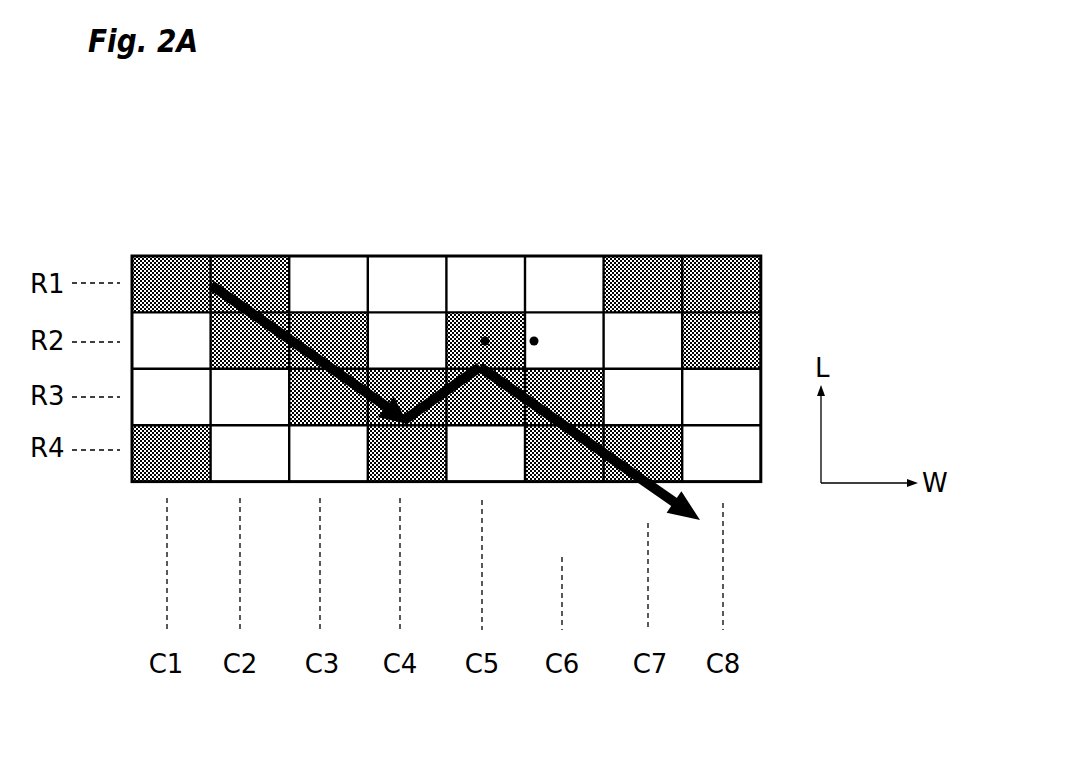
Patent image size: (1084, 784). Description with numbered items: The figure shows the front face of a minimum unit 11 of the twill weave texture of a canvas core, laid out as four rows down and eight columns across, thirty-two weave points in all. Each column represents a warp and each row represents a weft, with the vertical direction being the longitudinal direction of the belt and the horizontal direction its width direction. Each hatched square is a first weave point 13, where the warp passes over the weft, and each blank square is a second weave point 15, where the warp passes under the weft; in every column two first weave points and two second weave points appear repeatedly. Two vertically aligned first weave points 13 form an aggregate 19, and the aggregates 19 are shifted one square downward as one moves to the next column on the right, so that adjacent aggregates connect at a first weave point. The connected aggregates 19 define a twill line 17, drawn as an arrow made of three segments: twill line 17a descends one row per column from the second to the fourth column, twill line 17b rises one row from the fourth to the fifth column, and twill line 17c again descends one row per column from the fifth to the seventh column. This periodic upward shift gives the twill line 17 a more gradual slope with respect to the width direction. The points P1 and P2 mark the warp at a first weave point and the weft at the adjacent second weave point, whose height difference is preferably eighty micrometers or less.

The minimum unit 11 is at (493, 305).
The first weave point 13 is at (642, 257).
The second weave point 15 is at (563, 283).
The twill line 17 is at (542, 404).
The twill line 17a is at (263, 337).
The twill line 17b is at (445, 372).
The twill line 17c is at (682, 517).
The aggregate 19 is at (254, 253).
The element P1 is at (487, 345).
The element P2 is at (537, 345).